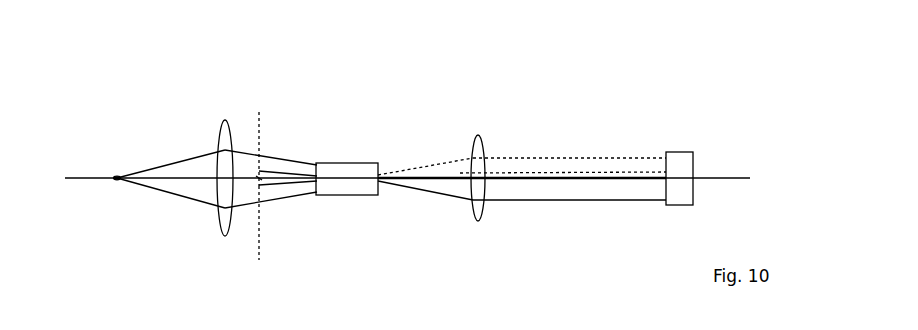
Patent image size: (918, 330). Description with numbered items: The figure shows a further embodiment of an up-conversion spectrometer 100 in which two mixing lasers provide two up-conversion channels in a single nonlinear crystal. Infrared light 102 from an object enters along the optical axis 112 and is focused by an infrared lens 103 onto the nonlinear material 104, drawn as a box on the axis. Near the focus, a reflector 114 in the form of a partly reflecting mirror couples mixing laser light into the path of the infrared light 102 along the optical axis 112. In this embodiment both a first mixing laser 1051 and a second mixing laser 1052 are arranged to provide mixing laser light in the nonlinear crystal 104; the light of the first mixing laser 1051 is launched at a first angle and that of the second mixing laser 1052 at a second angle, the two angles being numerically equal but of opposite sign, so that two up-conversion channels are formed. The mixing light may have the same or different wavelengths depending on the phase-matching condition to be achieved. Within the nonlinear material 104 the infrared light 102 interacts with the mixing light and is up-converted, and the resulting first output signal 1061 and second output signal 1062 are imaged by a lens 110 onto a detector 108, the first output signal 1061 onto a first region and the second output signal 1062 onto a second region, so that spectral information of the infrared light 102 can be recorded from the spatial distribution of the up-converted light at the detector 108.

The spectrometer 100 is at (670, 39).
The infrared light 102 is at (217, 170).
The infrared lens 103 is at (207, 163).
The nonlinear material 104 is at (347, 152).
The detector 108 is at (685, 151).
The lens 110 is at (487, 151).
The optical axis 112 is at (84, 163).
The reflector 114 is at (279, 203).
The first mixing laser 1051 is at (284, 240).
The second mixing laser 1052 is at (284, 130).
The first output signal 1061 is at (522, 216).
The second output signal 1062 is at (522, 146).